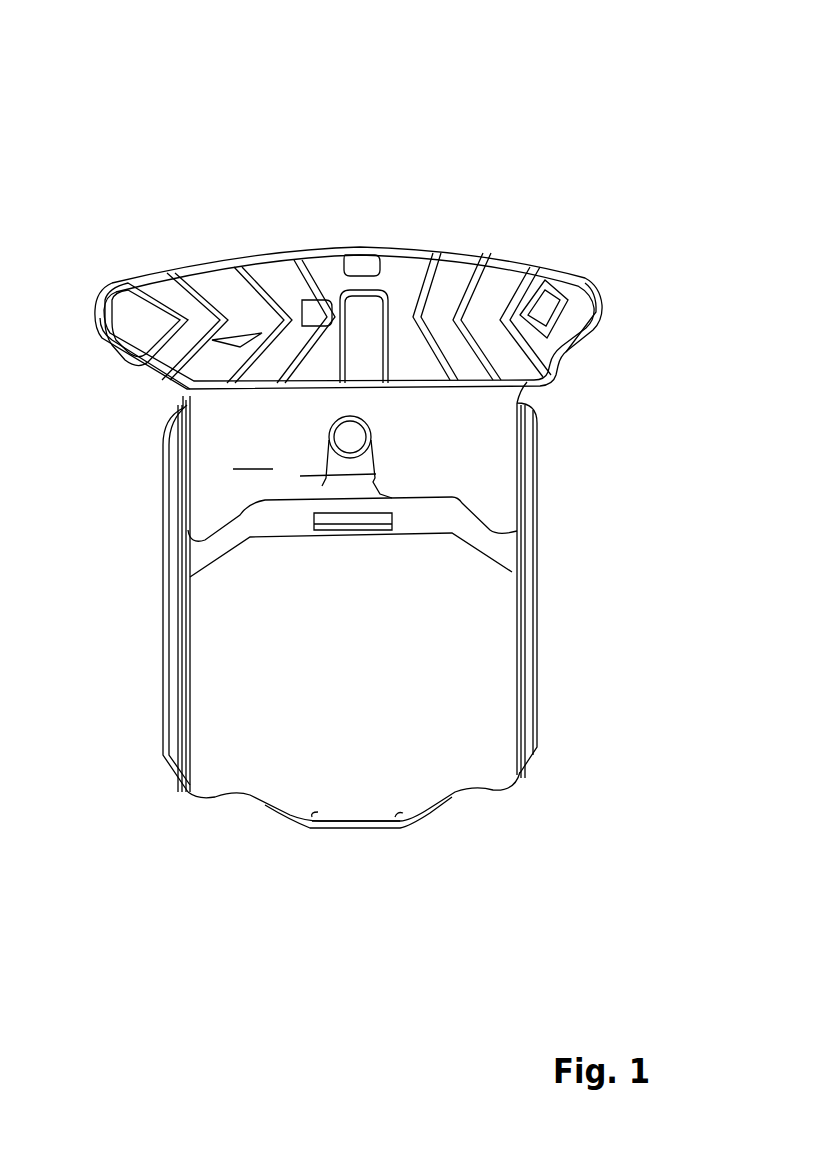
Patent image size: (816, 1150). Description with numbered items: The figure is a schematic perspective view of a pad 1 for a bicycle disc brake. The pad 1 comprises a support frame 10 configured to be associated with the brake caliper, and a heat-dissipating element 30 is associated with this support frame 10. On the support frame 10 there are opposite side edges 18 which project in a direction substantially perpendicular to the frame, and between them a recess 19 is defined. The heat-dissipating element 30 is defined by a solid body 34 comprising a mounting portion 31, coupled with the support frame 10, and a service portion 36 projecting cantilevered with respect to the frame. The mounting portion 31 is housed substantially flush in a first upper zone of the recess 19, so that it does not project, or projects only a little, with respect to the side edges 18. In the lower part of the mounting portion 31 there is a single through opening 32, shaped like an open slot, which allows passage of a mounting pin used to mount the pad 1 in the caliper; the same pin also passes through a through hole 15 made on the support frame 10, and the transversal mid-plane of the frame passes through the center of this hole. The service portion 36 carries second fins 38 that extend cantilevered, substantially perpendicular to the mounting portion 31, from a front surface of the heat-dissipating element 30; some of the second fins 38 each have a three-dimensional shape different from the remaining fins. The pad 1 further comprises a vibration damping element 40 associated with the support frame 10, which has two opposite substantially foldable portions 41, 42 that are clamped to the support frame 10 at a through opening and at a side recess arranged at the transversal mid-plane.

The pad for a bicycle disc brake 1 is at (143, 95).
The heat-dissipating element 30 is at (340, 190).
The through hole 15 is at (349, 445).
The second fins 38 is at (425, 273).
The portion for fastening 41 is at (363, 530).
The service portion 36 is at (600, 326).
The support frame 10 is at (162, 568).
The side edges 18 is at (170, 685).
The mounting portion 31 is at (490, 484).
The recess 19 is at (497, 553).
The through opening 32 is at (300, 476).
The solid body 34 is at (255, 451).
The vibration damping element 40 is at (443, 752).
The portion for fastening 42 is at (358, 828).